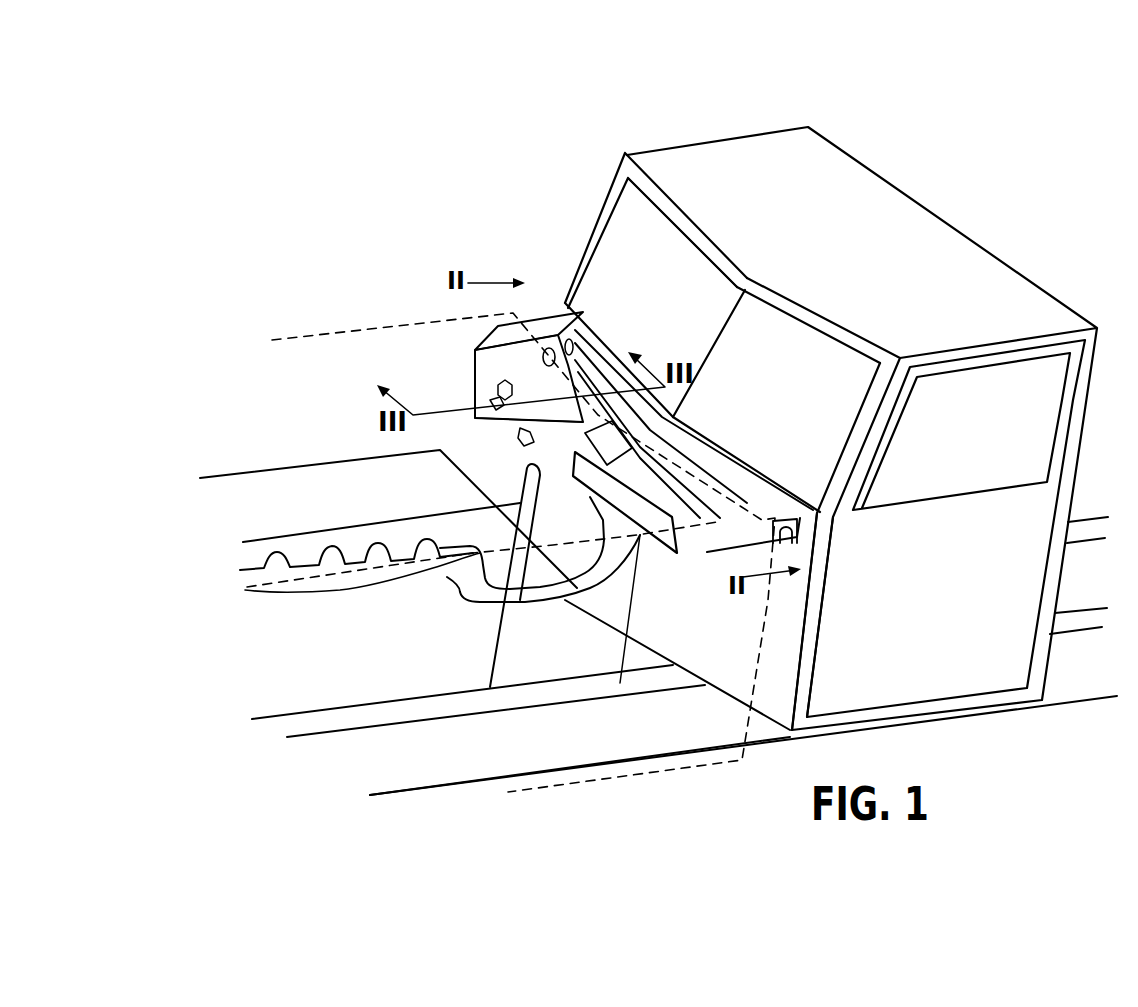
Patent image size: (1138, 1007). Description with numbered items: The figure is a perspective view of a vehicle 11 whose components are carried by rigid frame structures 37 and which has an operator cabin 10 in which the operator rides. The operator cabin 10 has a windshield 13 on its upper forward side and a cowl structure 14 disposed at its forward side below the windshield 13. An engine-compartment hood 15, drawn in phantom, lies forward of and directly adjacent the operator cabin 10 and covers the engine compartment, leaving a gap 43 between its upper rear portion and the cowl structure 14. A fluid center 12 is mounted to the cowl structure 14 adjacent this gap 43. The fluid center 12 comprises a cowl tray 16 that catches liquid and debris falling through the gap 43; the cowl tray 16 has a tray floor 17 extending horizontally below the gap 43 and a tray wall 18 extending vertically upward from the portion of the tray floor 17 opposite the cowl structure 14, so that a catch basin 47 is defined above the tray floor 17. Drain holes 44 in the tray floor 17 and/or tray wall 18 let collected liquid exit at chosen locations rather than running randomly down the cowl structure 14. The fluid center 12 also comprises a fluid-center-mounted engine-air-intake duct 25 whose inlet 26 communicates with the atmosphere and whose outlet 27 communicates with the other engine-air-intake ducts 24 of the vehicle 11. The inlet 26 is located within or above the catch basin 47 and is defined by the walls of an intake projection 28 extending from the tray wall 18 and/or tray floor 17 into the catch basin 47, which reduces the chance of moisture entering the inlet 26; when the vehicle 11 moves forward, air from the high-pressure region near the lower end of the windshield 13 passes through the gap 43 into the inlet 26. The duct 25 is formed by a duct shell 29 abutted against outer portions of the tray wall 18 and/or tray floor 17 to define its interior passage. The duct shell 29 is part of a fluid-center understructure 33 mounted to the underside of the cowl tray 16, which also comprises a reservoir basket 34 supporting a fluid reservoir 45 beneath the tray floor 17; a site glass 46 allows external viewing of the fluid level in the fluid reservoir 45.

The operator cabin 10 is at (897, 189).
The vehicle 11 is at (995, 206).
The fluid center 12 is at (477, 372).
The windshield 13 is at (620, 240).
The cowl structure 14 is at (833, 528).
The engine-compartment hood 15 is at (282, 340).
The cowl tray 16 is at (475, 348).
The tray floor 17 is at (812, 522).
The tray wall 18 is at (477, 380).
The engine-air-intake ducts 24 is at (620, 683).
The fluid-center-mounted engine-air-intake duct 25 is at (578, 448).
The inlet 26 is at (630, 357).
The outlet 27 is at (640, 533).
The intake projection 28 is at (673, 417).
The duct shell 29 is at (507, 600).
The fluid-center understructure 33 is at (480, 563).
The reservoir basket 34 is at (477, 417).
The frame structures 37 is at (588, 738).
The gap 43 is at (567, 340).
The drain holes 44 is at (782, 540).
The fluid reservoir 45 is at (473, 413).
The site glass 46 is at (548, 412).
The catch basin 47 is at (520, 440).